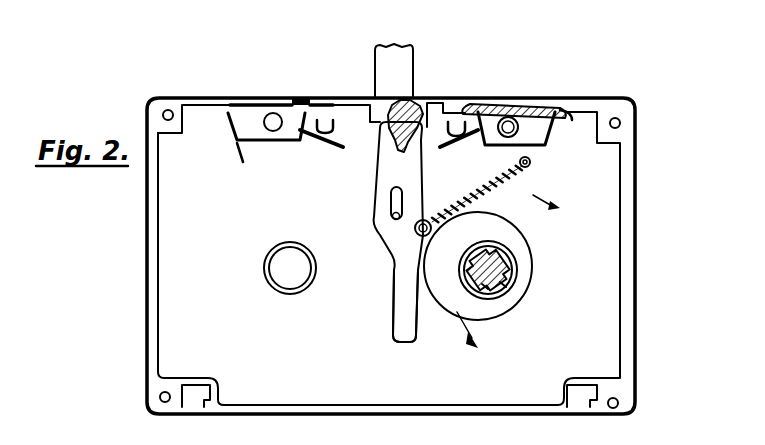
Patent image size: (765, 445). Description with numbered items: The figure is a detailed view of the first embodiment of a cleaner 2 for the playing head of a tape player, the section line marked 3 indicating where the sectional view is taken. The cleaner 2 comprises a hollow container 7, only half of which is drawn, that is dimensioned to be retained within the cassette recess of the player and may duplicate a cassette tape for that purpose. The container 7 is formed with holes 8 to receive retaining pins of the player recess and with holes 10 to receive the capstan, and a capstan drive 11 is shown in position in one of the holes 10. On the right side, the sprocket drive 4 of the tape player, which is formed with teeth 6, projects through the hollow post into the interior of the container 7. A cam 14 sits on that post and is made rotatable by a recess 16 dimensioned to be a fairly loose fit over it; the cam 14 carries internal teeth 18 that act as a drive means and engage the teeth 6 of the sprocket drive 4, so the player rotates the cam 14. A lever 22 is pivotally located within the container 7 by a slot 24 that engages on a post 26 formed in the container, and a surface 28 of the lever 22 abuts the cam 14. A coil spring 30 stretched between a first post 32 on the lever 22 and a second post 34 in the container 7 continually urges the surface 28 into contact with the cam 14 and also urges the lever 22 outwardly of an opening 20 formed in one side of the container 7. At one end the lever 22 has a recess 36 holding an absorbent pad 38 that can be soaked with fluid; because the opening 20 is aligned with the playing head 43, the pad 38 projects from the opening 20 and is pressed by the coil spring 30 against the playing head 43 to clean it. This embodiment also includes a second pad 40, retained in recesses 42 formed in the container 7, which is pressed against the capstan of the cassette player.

The cleaner 2 is at (636, 230).
The section line 3- 3 is at (517, 283).
The sprocket drive 4 is at (516, 260).
The teeth 6 is at (490, 296).
The hollow container 7 is at (598, 290).
The holes 8 is at (322, 118).
The holes 10 is at (270, 118).
The capstan drive 11 is at (532, 110).
The cam 14 is at (485, 222).
The recess 16 is at (508, 292).
The internal teeth 18 is at (512, 272).
The opening 20 is at (367, 104).
The lever 22 is at (392, 233).
The slot 24 is at (390, 194).
The post 26 is at (392, 215).
The surface 28 is at (418, 290).
The coil spring 30 is at (484, 184).
The first post 32 is at (428, 218).
The second post 34 is at (530, 166).
The recess 36 is at (402, 140).
The absorbent pad 38 is at (420, 108).
The second pad 40 is at (540, 104).
The recesses 42 is at (566, 114).
The playing head 43 is at (412, 68).